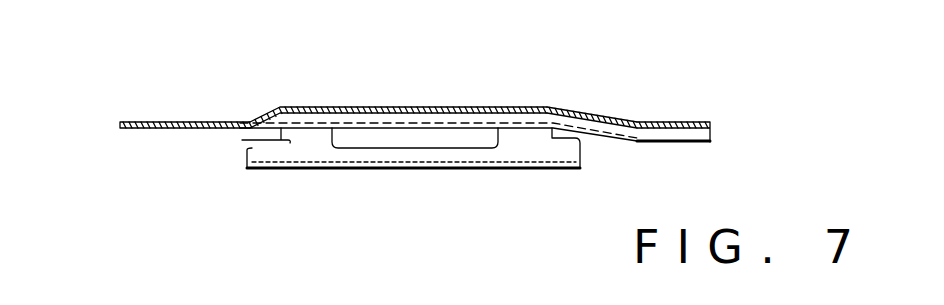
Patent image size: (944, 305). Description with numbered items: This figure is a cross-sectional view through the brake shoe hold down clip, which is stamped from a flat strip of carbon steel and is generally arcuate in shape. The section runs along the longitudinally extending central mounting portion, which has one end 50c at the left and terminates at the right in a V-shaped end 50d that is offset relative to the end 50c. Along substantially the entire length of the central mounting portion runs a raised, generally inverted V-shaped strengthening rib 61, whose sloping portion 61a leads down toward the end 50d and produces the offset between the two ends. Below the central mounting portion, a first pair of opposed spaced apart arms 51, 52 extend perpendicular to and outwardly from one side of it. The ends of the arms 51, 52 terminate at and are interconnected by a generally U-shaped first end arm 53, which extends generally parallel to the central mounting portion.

The end of central mounting portion 50c is at (120, 127).
The V-shaped end 50d is at (712, 132).
The strengthening rib 61 is at (348, 108).
The inclined portion of cover layer 61a is at (600, 113).
The first arm 51 is at (578, 139).
The first arm 52 is at (242, 140).
The first end arm 53 is at (407, 160).